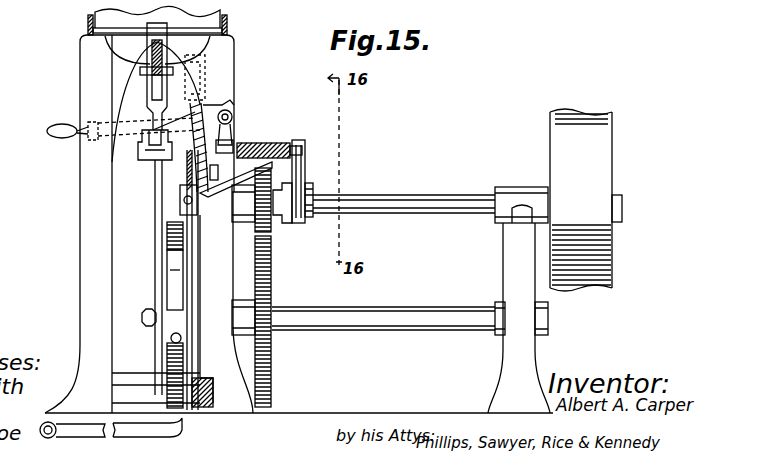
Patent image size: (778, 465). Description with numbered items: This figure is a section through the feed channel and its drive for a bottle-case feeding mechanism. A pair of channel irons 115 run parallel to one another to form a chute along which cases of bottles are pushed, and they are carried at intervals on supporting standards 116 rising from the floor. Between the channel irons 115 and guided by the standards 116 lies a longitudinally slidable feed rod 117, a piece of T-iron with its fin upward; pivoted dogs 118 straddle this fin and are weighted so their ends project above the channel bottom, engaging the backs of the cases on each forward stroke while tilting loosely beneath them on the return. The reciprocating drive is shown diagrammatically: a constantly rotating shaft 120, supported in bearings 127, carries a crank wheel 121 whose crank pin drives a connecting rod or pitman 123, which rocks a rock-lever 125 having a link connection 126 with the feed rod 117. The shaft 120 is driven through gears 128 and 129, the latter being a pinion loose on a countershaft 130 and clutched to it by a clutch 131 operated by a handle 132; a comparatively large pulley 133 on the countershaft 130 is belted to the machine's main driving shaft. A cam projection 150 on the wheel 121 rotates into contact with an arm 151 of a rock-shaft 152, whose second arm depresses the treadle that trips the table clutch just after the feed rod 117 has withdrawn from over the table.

The channel irons 115 is at (88, 26).
The supporting standards 116 is at (297, 224).
The feed rod 117 is at (147, 63).
The dogs 118 is at (163, 45).
The shaft 120 is at (421, 299).
The crank wheel 121 is at (176, 287).
The connecting rod or pitman 123 is at (148, 310).
The rock-lever 125 is at (156, 238).
The link connection 126 is at (152, 108).
The bearings 127 is at (242, 303).
The gear 128 is at (271, 364).
The gear (pinion) 129 is at (271, 173).
The countershaft 130 is at (424, 190).
The clutch 131 is at (290, 223).
The handle 132 is at (64, 142).
The pulley 133 is at (586, 200).
The cam projection 150 is at (171, 339).
The arm 151 is at (164, 433).
The rock-shaft 152 is at (54, 436).